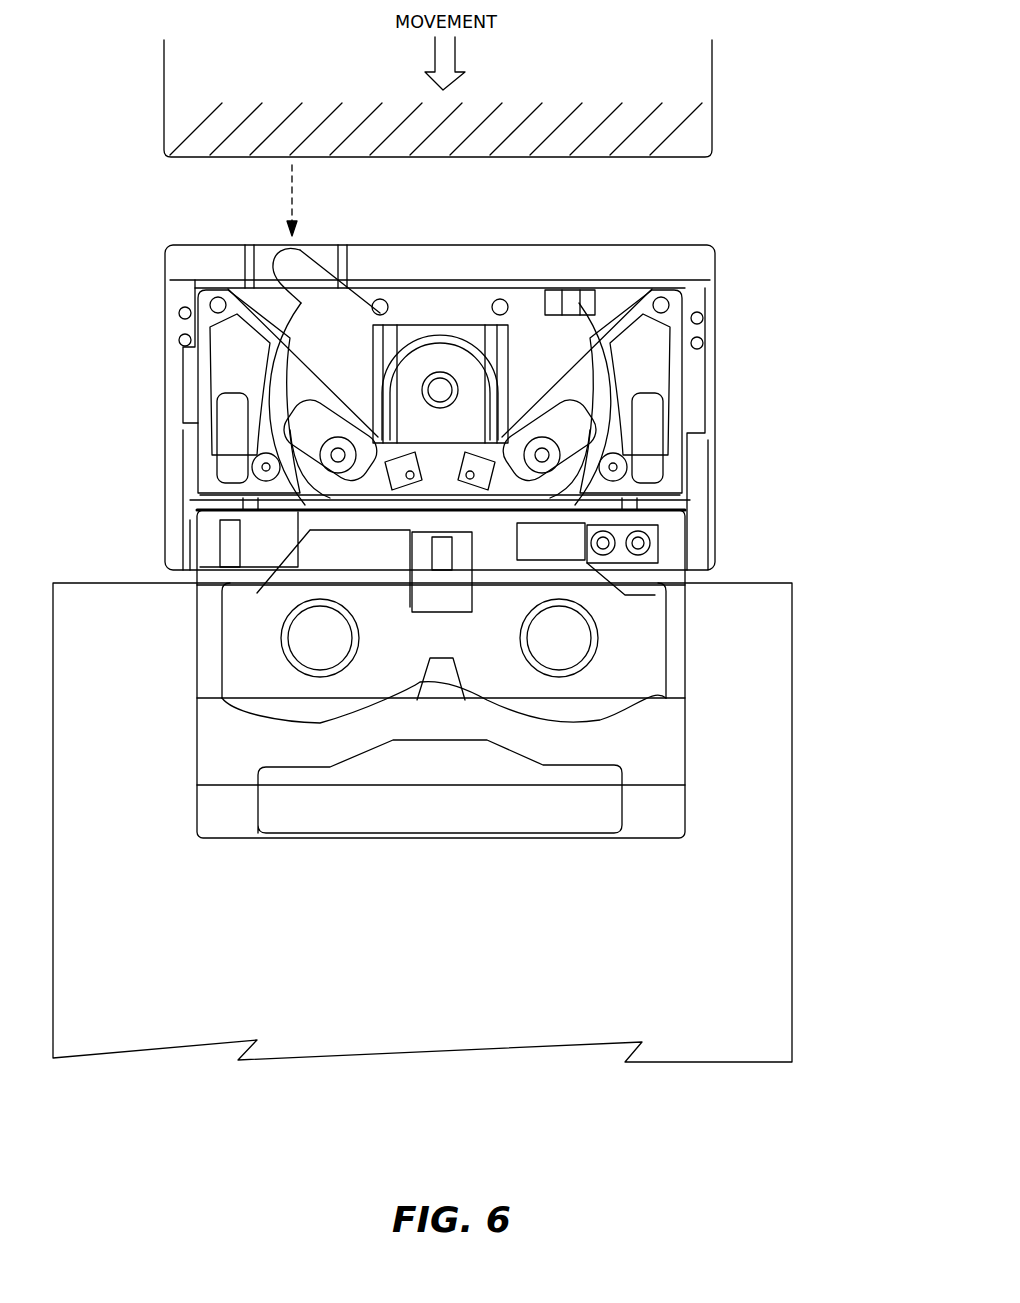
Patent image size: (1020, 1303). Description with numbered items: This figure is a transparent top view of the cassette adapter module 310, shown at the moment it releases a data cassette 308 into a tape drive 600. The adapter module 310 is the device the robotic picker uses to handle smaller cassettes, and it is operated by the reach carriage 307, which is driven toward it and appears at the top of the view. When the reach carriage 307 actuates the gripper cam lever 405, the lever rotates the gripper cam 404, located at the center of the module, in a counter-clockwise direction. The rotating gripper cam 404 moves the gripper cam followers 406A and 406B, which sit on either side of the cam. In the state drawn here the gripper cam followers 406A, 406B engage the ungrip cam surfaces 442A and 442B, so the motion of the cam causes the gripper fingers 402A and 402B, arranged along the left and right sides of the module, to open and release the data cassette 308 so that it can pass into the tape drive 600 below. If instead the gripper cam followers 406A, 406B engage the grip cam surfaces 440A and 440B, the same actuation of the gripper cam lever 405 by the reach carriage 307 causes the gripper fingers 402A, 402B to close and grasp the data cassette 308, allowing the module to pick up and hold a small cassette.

The reach carriage 307 is at (712, 93).
The cassette adapter module 310 is at (720, 297).
The gripper cam lever 405 is at (306, 263).
The gripper cam 404 is at (495, 327).
The gripper cam follower 406A is at (537, 432).
The gripper cam follower 406B is at (313, 427).
The grip cam surface 440A is at (587, 525).
The grip cam surface 440B is at (316, 485).
The gripper finger 402A is at (677, 437).
The gripper finger 402B is at (192, 427).
The ungrip cam surface 442A is at (537, 480).
The ungrip cam surface 442B is at (347, 457).
The data cassette 308 is at (197, 770).
The tape drive 600 is at (792, 705).